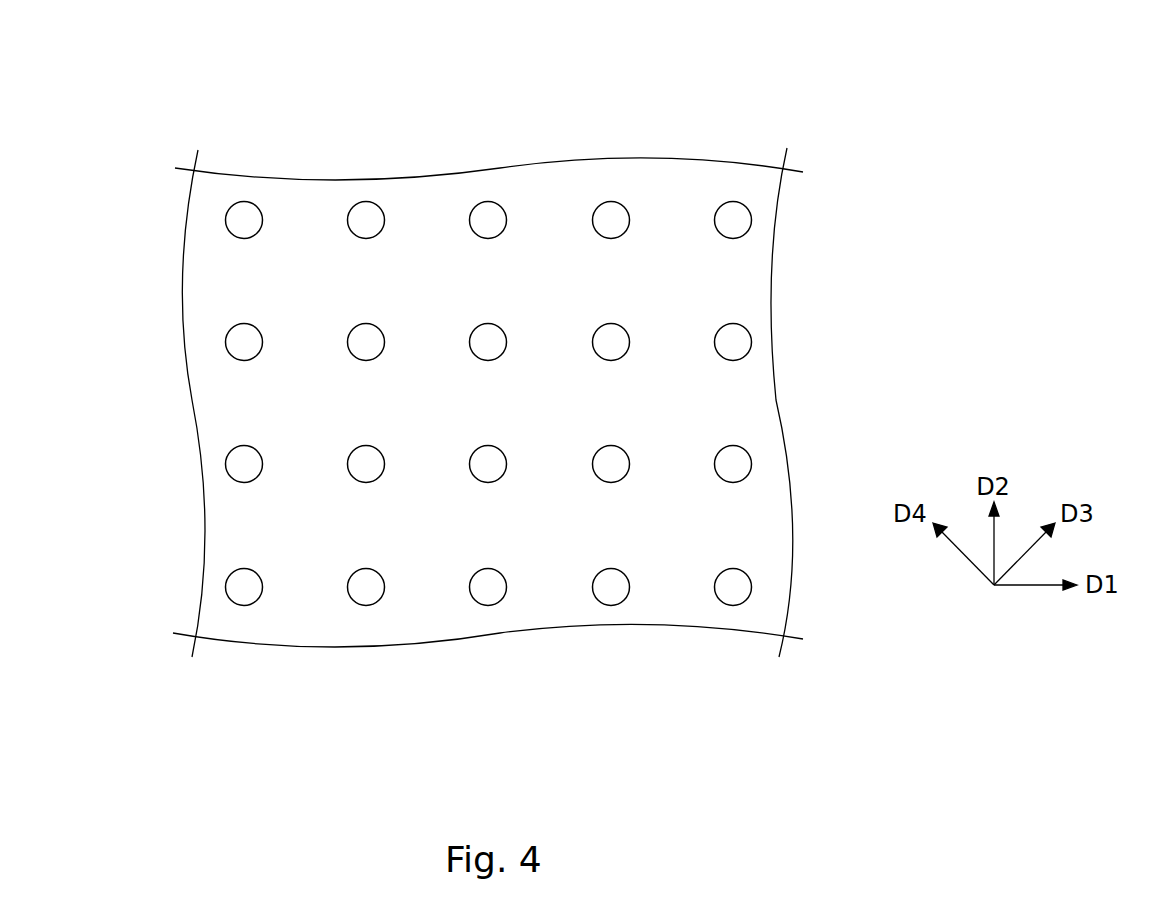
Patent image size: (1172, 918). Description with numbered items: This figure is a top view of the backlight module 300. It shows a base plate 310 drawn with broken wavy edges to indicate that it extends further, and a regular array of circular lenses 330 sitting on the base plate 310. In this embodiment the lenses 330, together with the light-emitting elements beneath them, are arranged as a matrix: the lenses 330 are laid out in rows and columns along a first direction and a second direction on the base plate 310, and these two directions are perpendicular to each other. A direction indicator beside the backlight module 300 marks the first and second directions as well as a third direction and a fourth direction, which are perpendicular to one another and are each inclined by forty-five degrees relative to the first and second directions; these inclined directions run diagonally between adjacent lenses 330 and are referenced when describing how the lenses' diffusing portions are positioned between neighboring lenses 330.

The backlight module 300 is at (100, 66).
The base plate 310 is at (663, 603).
The lens 330 is at (610, 217).